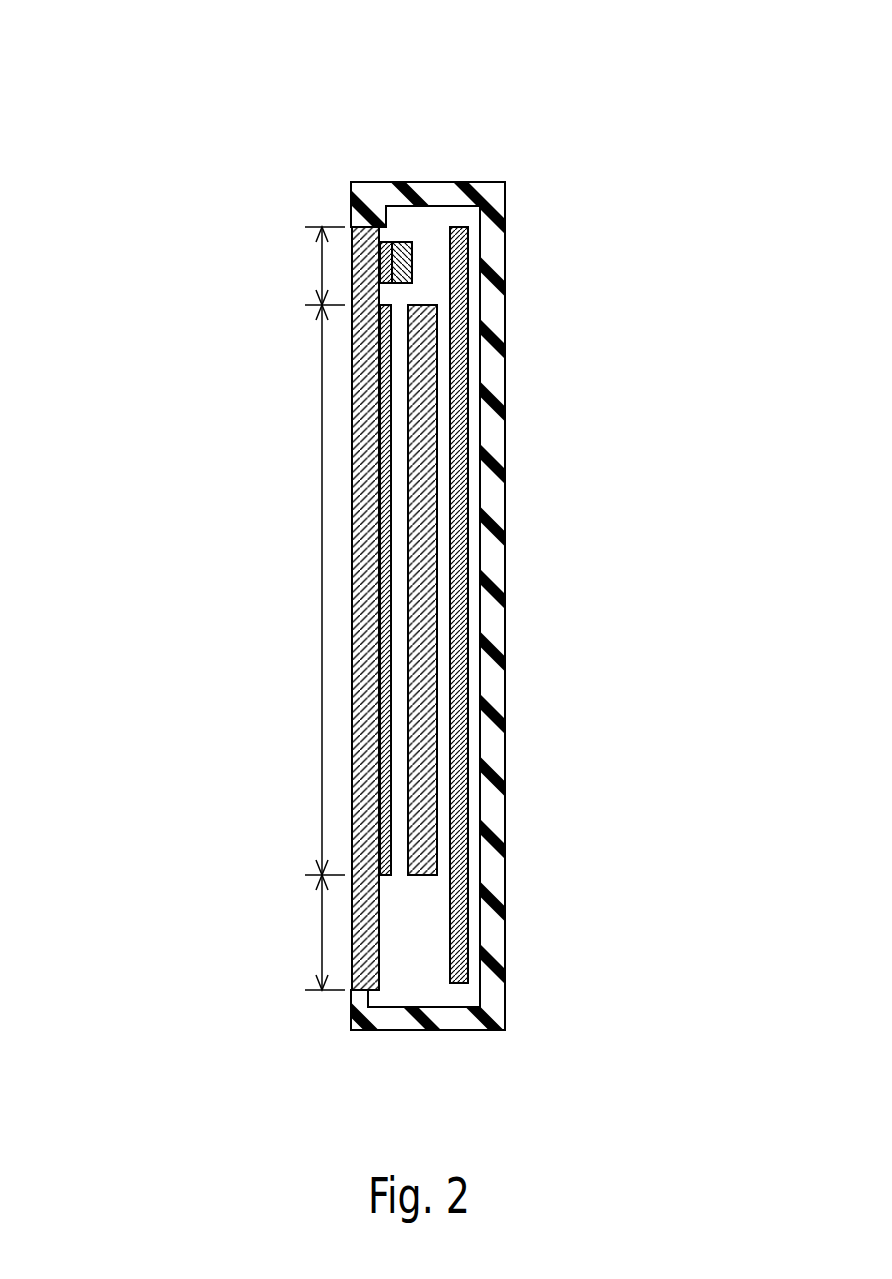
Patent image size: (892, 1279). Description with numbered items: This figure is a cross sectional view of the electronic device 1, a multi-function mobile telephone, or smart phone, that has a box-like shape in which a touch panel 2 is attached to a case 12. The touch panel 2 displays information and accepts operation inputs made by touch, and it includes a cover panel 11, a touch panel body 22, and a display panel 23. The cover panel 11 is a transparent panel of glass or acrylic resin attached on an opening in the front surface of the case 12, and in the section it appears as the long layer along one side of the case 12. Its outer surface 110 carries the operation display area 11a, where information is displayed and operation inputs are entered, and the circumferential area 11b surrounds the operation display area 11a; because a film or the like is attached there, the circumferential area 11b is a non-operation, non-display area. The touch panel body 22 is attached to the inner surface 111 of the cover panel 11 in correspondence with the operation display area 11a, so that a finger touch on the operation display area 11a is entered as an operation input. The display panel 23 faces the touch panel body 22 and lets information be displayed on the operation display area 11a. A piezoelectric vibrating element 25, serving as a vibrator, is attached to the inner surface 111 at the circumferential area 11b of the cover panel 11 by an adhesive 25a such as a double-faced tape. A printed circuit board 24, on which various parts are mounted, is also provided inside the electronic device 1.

The electronic device 1 is at (525, 145).
The touch panel 2 is at (536, 681).
The cover panel 11 is at (352, 720).
The operation display area 11a is at (296, 590).
The circumferential area 11b is at (296, 608).
The outer surface 110 is at (352, 975).
The inner surface 111 is at (388, 232).
The case 12 is at (493, 493).
The touch panel body 22 is at (388, 655).
The display panel 23 is at (425, 605).
The printed circuit board 24 is at (462, 548).
The piezoelectric vibrating element 25 is at (515, 272).
The adhesive 25a is at (411, 268).